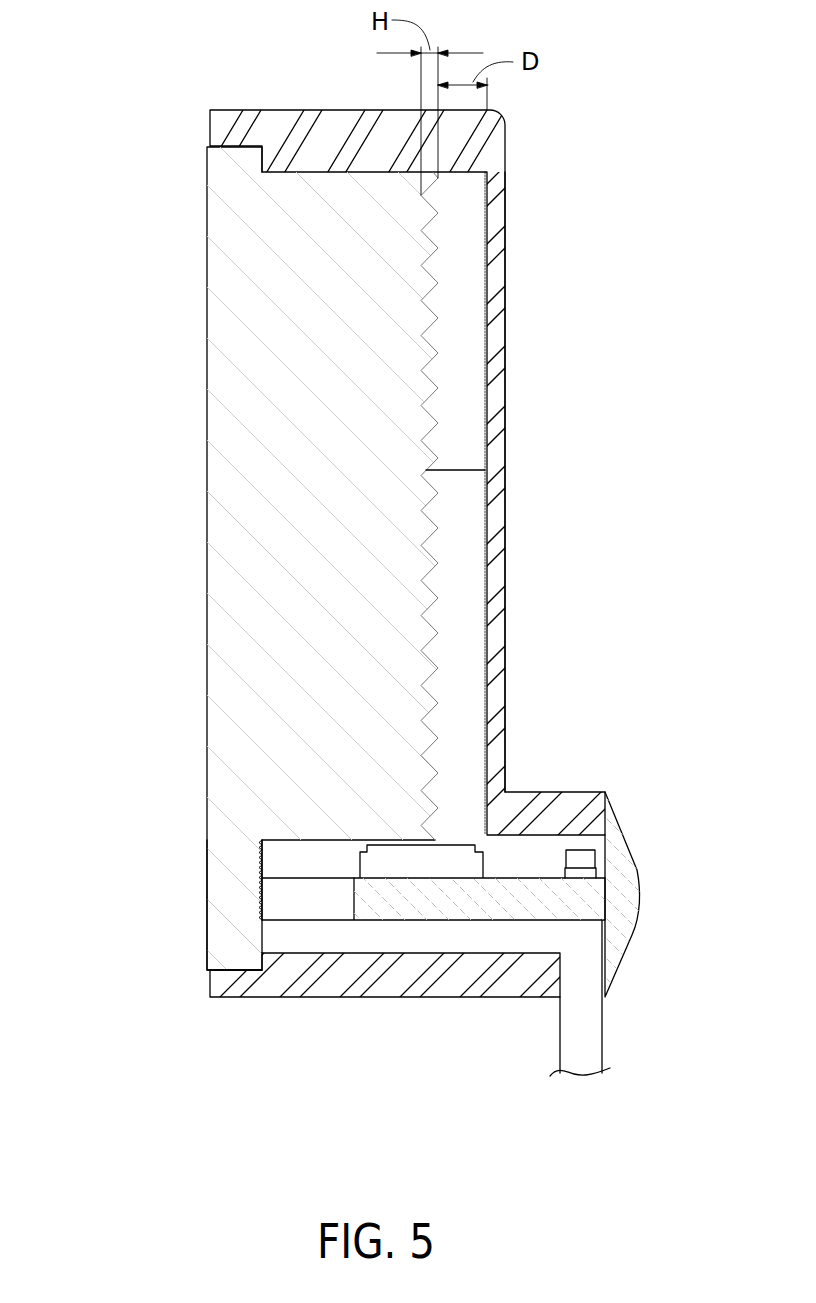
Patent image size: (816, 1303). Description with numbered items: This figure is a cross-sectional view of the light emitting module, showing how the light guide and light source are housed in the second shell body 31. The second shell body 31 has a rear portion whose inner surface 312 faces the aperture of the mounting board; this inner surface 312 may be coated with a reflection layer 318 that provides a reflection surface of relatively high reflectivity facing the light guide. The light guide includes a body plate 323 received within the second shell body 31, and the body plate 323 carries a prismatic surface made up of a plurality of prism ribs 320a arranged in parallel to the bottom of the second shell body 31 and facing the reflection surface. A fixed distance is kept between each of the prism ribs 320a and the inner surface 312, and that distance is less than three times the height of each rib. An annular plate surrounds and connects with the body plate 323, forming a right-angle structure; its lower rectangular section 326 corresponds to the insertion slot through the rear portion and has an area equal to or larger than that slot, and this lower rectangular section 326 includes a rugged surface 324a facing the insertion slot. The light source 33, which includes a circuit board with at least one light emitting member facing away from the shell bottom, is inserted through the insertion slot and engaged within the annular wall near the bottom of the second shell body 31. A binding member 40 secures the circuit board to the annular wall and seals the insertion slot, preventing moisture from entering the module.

The second shell body 31 is at (416, 497).
The inner surface 312 is at (490, 260).
The reflection layer 318 is at (488, 326).
The prism ribs 320a is at (430, 518).
The body plate 323 is at (367, 594).
The rugged surface 324a is at (262, 893).
The lower rectangular section 326 is at (217, 887).
The light source 33 is at (405, 923).
The binding member 40 is at (620, 848).